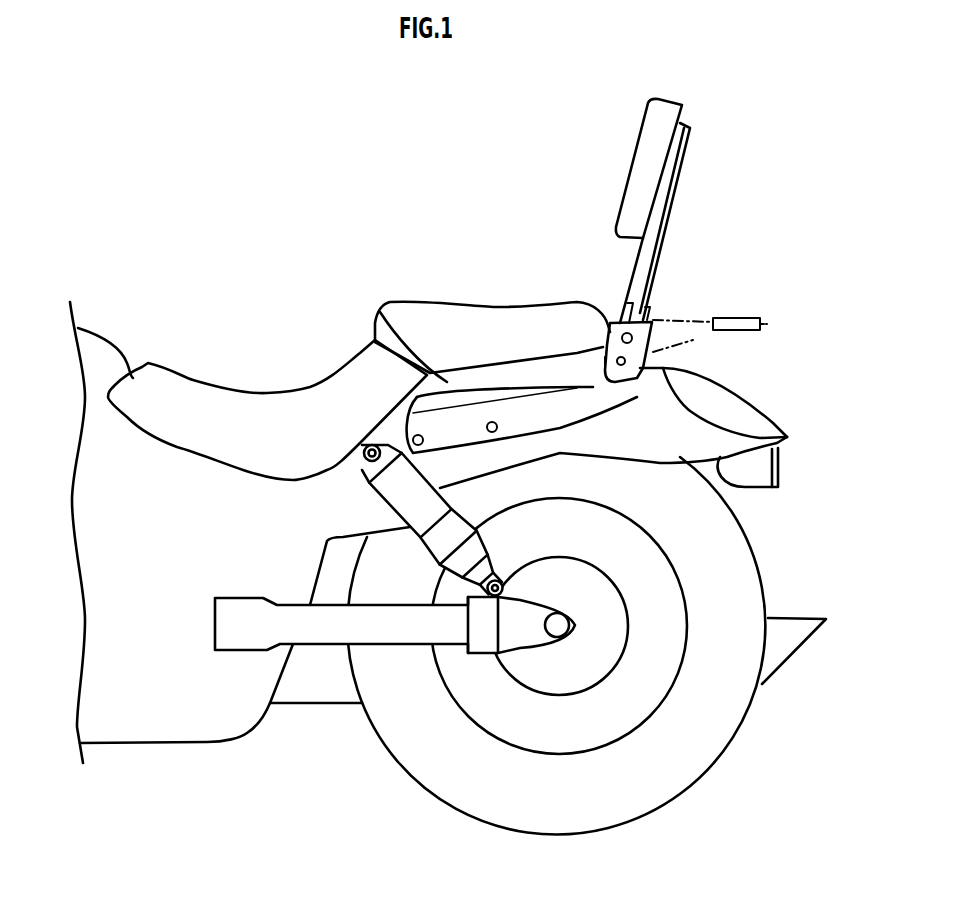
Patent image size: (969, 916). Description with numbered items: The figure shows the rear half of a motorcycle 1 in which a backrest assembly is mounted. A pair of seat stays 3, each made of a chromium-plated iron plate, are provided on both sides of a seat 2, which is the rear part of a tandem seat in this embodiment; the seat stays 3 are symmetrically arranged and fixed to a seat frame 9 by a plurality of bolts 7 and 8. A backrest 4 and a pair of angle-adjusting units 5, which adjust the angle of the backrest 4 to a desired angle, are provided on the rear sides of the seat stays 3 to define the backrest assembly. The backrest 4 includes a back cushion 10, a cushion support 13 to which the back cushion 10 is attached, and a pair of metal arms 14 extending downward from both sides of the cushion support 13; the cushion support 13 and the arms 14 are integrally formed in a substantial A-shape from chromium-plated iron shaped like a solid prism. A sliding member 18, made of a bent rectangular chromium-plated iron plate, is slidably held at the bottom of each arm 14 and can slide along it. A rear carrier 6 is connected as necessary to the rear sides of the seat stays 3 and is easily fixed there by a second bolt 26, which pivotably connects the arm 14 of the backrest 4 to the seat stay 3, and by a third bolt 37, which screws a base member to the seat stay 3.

The motorcycle 1 is at (193, 197).
The seat 2 is at (445, 302).
The seat stays 3 is at (527, 382).
The backrest 4 is at (675, 95).
The angle-adjusting units 5 is at (657, 300).
The rear carrier 6 is at (710, 317).
The bolts 7 is at (421, 447).
The bolts 8 is at (492, 433).
The seat frame 9 is at (447, 382).
The back cushion 10 is at (630, 167).
The cushion support 13 is at (683, 163).
The arms 14 is at (638, 267).
The sliding member 18 is at (625, 317).
The second bolt 26 is at (640, 372).
The third bolt 37 is at (622, 367).